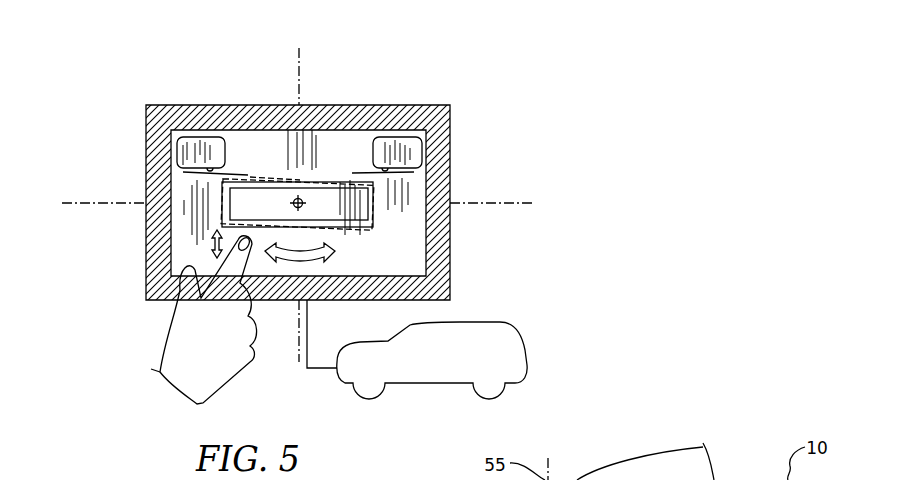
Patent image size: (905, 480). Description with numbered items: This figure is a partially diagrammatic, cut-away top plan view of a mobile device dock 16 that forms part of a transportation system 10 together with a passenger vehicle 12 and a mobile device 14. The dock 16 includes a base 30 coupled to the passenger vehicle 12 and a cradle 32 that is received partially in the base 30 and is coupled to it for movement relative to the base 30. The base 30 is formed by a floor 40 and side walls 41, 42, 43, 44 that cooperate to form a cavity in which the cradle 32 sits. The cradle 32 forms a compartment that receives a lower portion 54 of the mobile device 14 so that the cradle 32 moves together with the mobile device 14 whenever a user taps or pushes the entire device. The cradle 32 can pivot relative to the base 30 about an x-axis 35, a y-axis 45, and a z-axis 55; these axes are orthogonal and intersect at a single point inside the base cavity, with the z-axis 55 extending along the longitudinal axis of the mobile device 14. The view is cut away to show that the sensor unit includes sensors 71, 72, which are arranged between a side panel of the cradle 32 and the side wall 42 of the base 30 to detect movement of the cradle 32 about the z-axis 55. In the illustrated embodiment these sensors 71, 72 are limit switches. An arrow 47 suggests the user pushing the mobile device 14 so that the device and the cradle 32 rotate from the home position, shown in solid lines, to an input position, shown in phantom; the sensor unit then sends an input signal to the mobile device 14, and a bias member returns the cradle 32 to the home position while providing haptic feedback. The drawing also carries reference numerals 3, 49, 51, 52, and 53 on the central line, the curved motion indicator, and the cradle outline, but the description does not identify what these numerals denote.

The transportation system 10 is at (552, 80).
The passenger vehicle 12 is at (446, 324).
The mobile device 14 is at (374, 213).
The mobile device dock 16 is at (438, 88).
The housing top wall 3 is at (452, 111).
The base 30 is at (452, 145).
The cradle 32 is at (382, 203).
The x-axis 35 is at (298, 352).
The floor 40 is at (327, 149).
The side wall 41 is at (144, 133).
The side wall 42 is at (195, 100).
The side wall 43 is at (452, 220).
The side wall 44 is at (350, 301).
The y-axis 45 is at (82, 202).
The arrow 47 is at (207, 243).
The rotational adjustment arrow 49 is at (300, 263).
The display edge 51 is at (218, 200).
The mounting line 52 is at (268, 175).
The tilted display position 53 is at (385, 223).
The lower portion 54 is at (343, 236).
The z-axis 55 is at (299, 198).
The sensor 71 is at (184, 136).
The sensor 72 is at (393, 136).